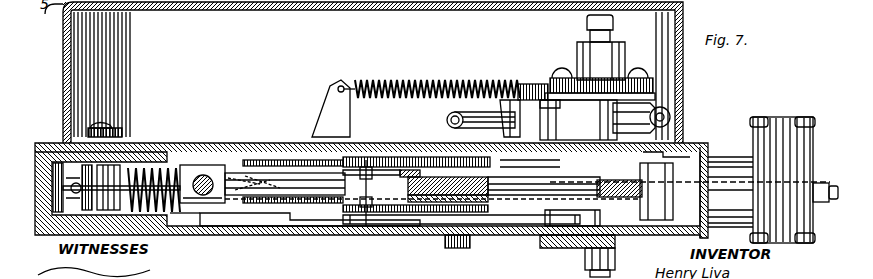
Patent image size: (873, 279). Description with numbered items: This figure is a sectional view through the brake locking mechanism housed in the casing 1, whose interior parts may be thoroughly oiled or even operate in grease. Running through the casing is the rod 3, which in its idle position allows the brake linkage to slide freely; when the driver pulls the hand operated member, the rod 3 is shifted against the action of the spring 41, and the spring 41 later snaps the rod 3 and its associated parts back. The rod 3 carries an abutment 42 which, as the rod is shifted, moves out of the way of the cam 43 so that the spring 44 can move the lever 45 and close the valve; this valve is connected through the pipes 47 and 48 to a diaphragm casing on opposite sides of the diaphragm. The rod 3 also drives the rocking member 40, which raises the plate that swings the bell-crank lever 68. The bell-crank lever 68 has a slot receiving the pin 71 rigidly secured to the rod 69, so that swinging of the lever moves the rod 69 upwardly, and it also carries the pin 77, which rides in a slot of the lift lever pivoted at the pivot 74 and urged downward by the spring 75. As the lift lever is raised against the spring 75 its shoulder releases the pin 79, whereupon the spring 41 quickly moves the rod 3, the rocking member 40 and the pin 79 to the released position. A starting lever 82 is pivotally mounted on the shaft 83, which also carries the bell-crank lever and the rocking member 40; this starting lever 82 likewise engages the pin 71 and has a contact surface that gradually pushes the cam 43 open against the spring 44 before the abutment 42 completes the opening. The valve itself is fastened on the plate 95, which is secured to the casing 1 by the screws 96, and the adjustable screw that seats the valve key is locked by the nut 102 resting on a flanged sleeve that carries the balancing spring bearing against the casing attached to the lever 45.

The casing 1 is at (281, 145).
The rod 3 is at (822, 182).
The rocking member 40 is at (530, 200).
The spring 41 is at (145, 170).
The abutment 42 is at (558, 226).
The cam 43 is at (640, 236).
The spring 44 is at (462, 88).
The lever 45 is at (530, 90).
The pipe 47 is at (447, 120).
The pipe 48 is at (668, 118).
The bell-crank lever 68 is at (478, 192).
The rod 69 is at (205, 178).
The pin 71 is at (195, 163).
The pivot 74 is at (270, 226).
The spring 75 is at (160, 208).
The pin 77 is at (369, 226).
The pin 79 is at (399, 145).
The starting lever 82 is at (418, 215).
The shaft 83 is at (452, 248).
The plate 95 is at (250, 142).
The screws 96 is at (118, 132).
The nut 102 is at (586, 28).